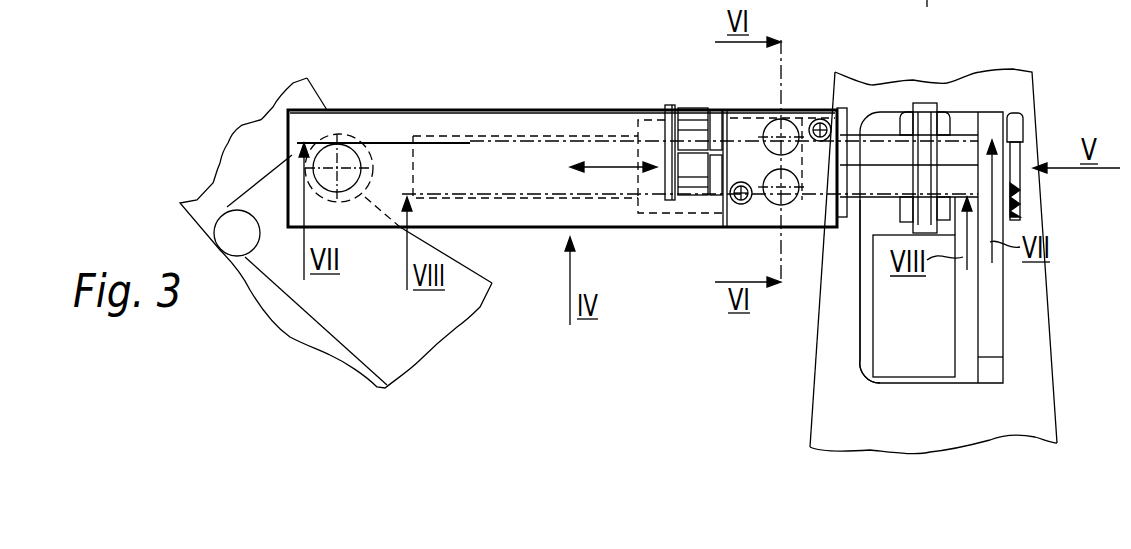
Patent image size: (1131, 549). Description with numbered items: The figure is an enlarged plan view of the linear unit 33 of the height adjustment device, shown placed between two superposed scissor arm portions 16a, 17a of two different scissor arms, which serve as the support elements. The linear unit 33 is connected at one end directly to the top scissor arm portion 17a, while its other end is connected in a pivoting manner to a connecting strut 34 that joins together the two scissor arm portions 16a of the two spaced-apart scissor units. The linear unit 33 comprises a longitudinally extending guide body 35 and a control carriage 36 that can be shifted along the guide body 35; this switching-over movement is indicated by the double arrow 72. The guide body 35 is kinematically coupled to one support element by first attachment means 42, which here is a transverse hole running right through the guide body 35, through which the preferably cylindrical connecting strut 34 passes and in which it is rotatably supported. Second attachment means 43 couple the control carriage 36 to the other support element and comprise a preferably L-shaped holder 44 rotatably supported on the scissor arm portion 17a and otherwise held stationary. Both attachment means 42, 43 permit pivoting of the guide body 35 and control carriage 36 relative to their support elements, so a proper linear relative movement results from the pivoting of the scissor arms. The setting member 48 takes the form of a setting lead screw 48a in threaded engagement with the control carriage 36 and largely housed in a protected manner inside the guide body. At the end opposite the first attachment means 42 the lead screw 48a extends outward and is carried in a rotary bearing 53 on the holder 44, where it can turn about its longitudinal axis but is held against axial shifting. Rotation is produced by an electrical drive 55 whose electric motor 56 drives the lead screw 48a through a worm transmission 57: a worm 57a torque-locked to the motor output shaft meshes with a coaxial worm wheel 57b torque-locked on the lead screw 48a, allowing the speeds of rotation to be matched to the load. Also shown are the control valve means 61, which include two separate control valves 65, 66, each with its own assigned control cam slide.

The scissor arm portion 16a is at (277, 302).
The scissor arm portion 17a is at (1030, 393).
The linear unit 33 is at (476, 110).
The connecting strut 34 is at (350, 157).
The guide body 35 is at (535, 122).
The control carriage 36 is at (668, 217).
The first attachment means 42 is at (347, 150).
The second attachment means 43 is at (968, 0).
The holder 44 is at (990, 322).
The setting member 48 is at (855, 200).
The setting lead screw 48a is at (855, 200).
The rotary bearing 53 is at (1020, 148).
The electrical drive 55 is at (860, 338).
The electric motor 56 is at (927, 353).
The worm transmission 57 is at (940, 150).
The worm 57a is at (902, 113).
The worm wheel 57b is at (925, 108).
The control valve means 61 is at (760, 130).
The control valve 65 is at (790, 133).
The control valve 66 is at (790, 203).
The double arrow 72 is at (612, 166).